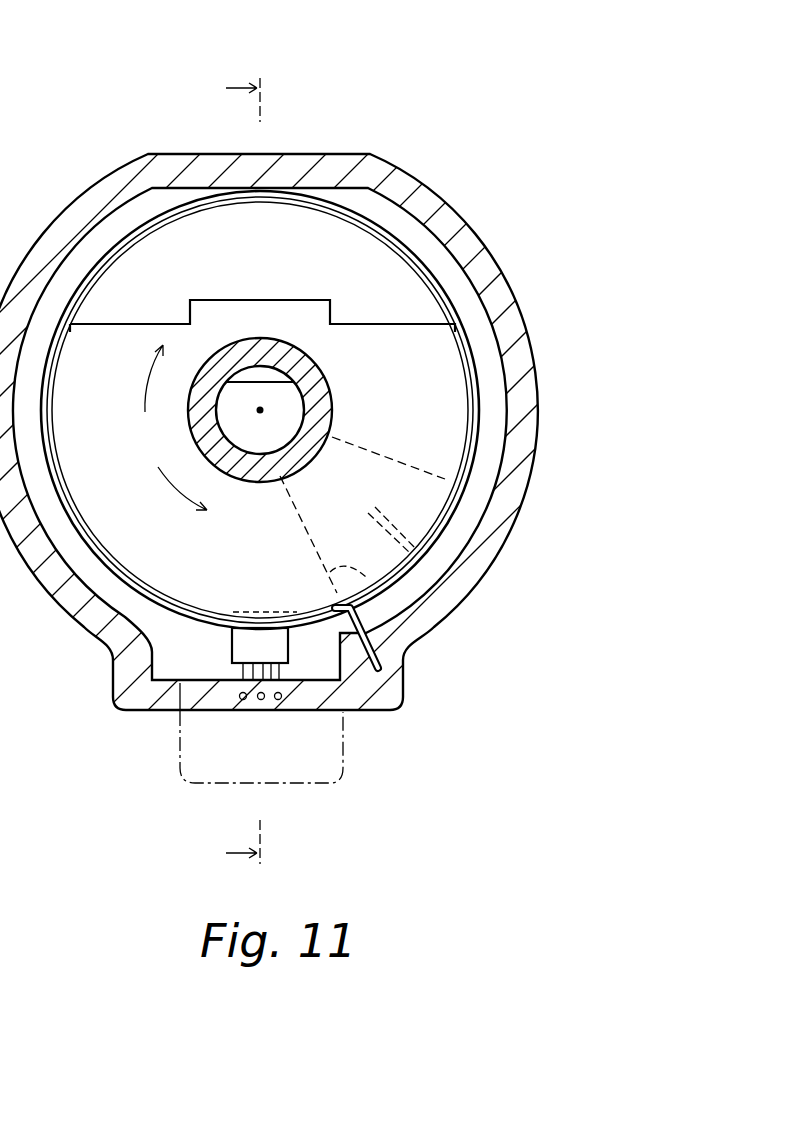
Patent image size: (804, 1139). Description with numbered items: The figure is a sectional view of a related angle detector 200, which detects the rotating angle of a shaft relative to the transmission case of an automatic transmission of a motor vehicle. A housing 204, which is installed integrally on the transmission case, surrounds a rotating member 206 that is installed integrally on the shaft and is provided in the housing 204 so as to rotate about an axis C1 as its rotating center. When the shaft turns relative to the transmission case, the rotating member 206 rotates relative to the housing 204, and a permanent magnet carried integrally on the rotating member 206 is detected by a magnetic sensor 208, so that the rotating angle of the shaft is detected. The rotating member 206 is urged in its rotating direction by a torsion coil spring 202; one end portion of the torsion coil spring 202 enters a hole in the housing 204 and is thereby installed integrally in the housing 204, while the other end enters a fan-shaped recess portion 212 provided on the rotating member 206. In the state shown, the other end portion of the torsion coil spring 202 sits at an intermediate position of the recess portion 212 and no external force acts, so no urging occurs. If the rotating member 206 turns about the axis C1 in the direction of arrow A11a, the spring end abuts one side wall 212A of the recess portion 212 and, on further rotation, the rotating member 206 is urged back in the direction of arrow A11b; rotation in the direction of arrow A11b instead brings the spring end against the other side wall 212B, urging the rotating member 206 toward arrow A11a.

The angle detector 200 is at (402, 433).
The torsion coil spring 202 is at (421, 250).
The housing 204 is at (522, 326).
The rotating member 206 is at (450, 436).
The magnetic sensor 208 is at (232, 641).
The fan-shaped recess portion 212 is at (456, 497).
The one side wall of the recess portion 212A is at (445, 479).
The other side wall of the recess portion 212B is at (417, 517).
The axis C1 is at (262, 409).
The arrow indicating a rotating direction A11a is at (145, 393).
The arrow indicating the opposite rotating direction A11b is at (177, 492).